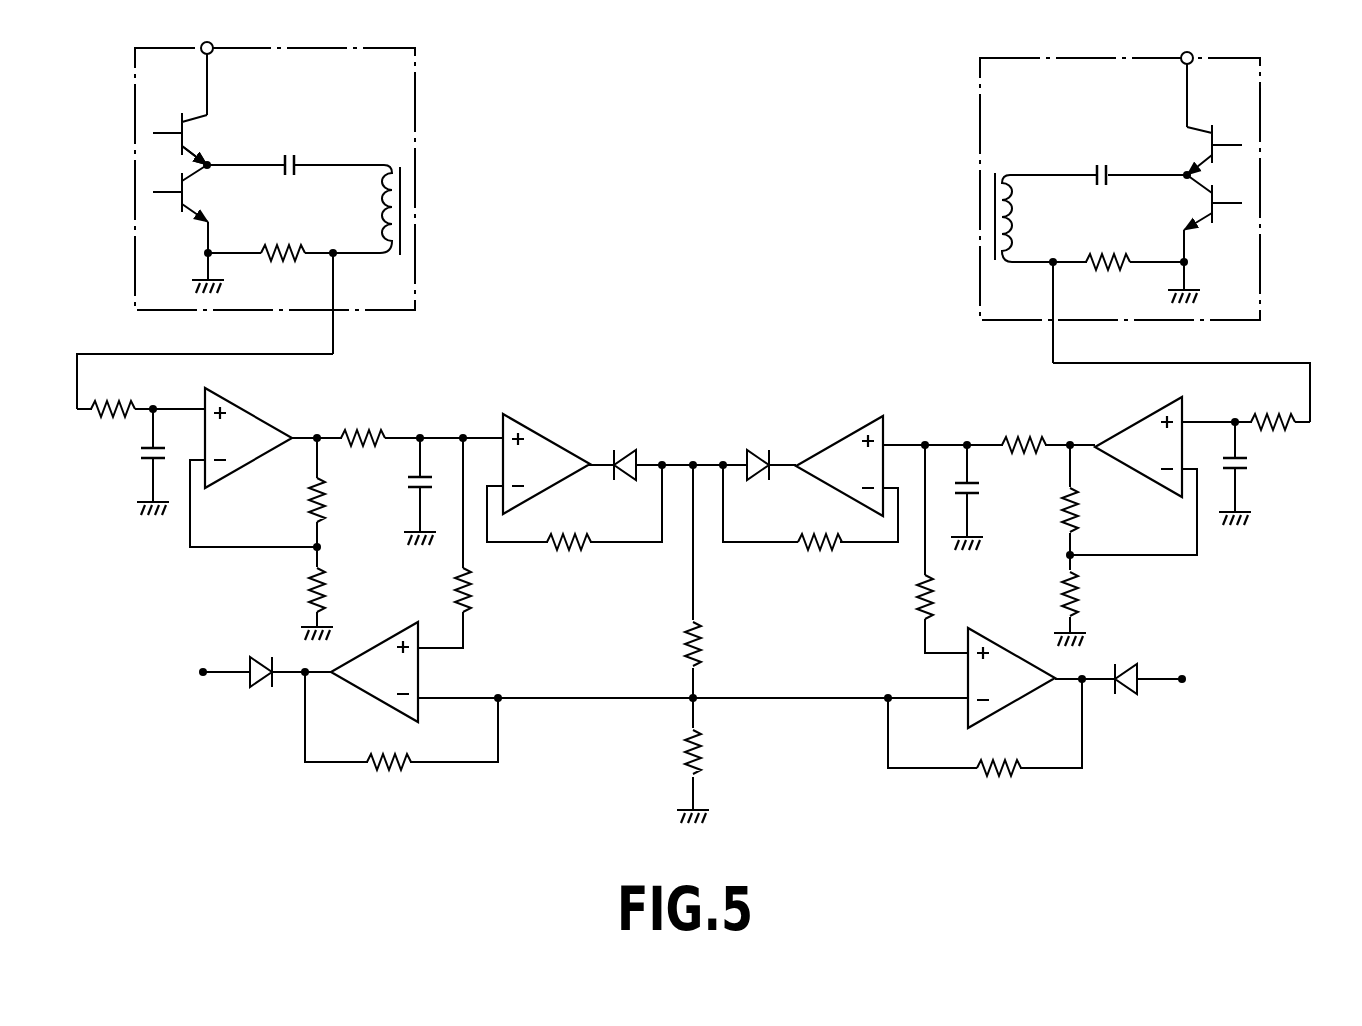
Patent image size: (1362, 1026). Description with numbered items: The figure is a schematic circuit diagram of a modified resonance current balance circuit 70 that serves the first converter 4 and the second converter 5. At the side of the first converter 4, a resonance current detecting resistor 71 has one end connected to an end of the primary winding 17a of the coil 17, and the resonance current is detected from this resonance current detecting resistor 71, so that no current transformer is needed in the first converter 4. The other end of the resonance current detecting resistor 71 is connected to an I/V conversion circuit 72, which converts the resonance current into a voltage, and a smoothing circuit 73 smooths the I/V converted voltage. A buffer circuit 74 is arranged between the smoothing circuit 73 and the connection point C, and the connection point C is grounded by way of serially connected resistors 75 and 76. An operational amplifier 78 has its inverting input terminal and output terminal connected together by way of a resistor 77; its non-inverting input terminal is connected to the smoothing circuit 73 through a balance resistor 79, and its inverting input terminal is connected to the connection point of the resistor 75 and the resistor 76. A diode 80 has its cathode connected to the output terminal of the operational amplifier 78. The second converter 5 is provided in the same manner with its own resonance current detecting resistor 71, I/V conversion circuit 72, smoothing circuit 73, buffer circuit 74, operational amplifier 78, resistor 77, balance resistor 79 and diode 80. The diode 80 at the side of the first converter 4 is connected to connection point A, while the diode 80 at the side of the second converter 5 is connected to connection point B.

The first converter 4 is at (415, 122).
The second converter 5 is at (980, 130).
The coil 17 is at (398, 152).
The primary winding 17a is at (342, 165).
The resonance current balance circuit 70 is at (686, 283).
The resonance current detecting resistor 71 is at (126, 418).
The I/V conversion circuit 72 is at (280, 421).
The smoothing circuit 73 is at (409, 419).
The buffer circuit 74 is at (557, 427).
The resistor 75 is at (700, 644).
The resistor 76 is at (700, 756).
The resistor 77 is at (387, 779).
The operational amplifier 78 is at (373, 650).
The balance resistor 79 is at (465, 599).
The diode 80 is at (257, 660).